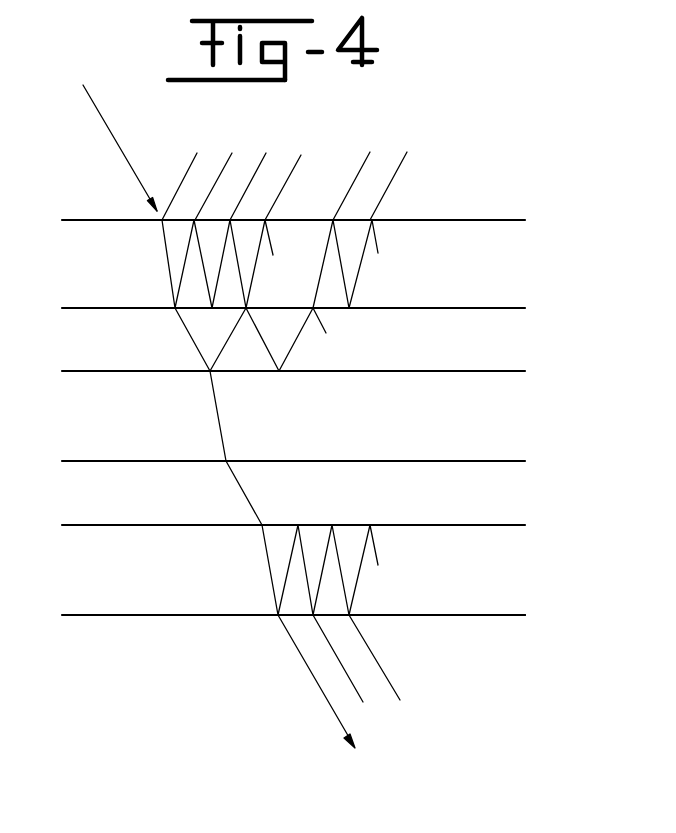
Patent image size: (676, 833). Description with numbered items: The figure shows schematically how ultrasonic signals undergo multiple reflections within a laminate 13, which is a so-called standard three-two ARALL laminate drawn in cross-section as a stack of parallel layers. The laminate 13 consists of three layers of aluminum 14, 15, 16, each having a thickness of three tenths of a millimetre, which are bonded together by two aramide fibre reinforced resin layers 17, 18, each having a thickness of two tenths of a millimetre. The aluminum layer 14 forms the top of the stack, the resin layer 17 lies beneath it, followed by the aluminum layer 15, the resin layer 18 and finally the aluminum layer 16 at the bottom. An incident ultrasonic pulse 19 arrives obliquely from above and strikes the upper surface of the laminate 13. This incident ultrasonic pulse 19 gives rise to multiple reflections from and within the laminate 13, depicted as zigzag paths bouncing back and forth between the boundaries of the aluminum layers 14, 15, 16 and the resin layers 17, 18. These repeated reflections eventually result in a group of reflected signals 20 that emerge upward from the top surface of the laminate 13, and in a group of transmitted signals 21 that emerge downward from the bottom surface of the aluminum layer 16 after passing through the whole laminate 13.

The laminate 13 is at (141, 632).
The layer of aluminum 14 is at (515, 262).
The layer of aluminum 15 is at (516, 415).
The layer of aluminum 16 is at (516, 565).
The aramide fibre reinforced resin layer 17 is at (516, 340).
The aramide fibre reinforced resin layer 18 is at (517, 492).
The incident ultrasonic pulse 19 is at (99, 113).
The reflected signals 20 is at (407, 152).
The transmitted signals 21 is at (363, 700).